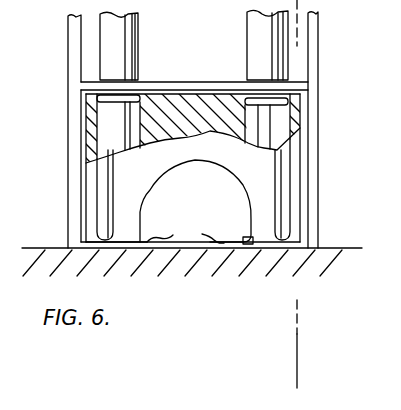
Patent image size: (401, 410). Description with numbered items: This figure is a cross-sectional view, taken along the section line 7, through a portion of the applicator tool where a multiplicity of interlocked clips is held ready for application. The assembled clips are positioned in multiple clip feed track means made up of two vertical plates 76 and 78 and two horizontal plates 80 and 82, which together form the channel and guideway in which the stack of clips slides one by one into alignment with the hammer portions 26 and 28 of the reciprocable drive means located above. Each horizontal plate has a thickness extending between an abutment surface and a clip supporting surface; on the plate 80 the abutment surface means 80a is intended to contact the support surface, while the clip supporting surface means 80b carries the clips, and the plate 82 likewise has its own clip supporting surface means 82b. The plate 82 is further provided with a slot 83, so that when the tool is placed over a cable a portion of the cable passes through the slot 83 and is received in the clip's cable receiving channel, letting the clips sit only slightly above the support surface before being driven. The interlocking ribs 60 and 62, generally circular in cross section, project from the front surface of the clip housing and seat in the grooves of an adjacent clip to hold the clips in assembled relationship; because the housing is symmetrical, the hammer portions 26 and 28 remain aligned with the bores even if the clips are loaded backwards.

The hammer portion 26 is at (138, 33).
The hammer portion 28 is at (240, 45).
The horizontal plate 80 is at (298, 86).
The vertical plate 78 is at (316, 174).
The vertical plate 76 is at (72, 204).
The interlocking rib 60 is at (105, 213).
The interlocking rib 62 is at (282, 210).
The horizontal plate 82 is at (285, 238).
The slot 83 is at (185, 236).
The clip supporting surface means 80b is at (145, 243).
The clip supporting surface means 82b is at (247, 245).
The abutment surface means 80a is at (265, 252).
The section line 7 is at (305, 368).